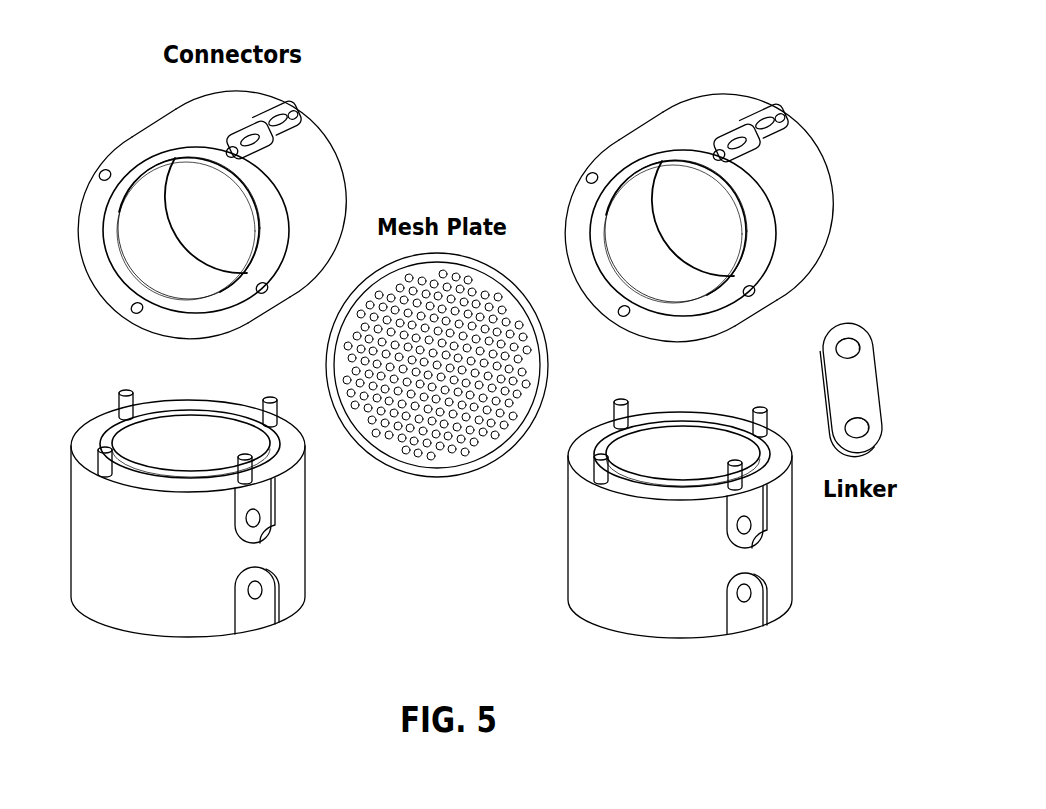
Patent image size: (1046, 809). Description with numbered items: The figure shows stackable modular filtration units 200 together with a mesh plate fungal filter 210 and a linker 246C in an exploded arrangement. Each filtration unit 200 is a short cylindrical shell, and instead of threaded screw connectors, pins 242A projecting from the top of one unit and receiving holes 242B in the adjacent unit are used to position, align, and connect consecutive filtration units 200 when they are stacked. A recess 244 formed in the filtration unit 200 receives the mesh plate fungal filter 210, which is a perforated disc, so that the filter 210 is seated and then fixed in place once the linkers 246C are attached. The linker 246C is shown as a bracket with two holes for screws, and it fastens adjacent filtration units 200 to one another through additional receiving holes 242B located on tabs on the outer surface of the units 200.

The modular filtration unit 200 is at (88, 141).
The recess 244 is at (623, 167).
The receiving holes 242B is at (258, 284).
The pins 242A is at (592, 475).
The fungal filter 210 is at (406, 488).
The linkers 246C is at (881, 382).